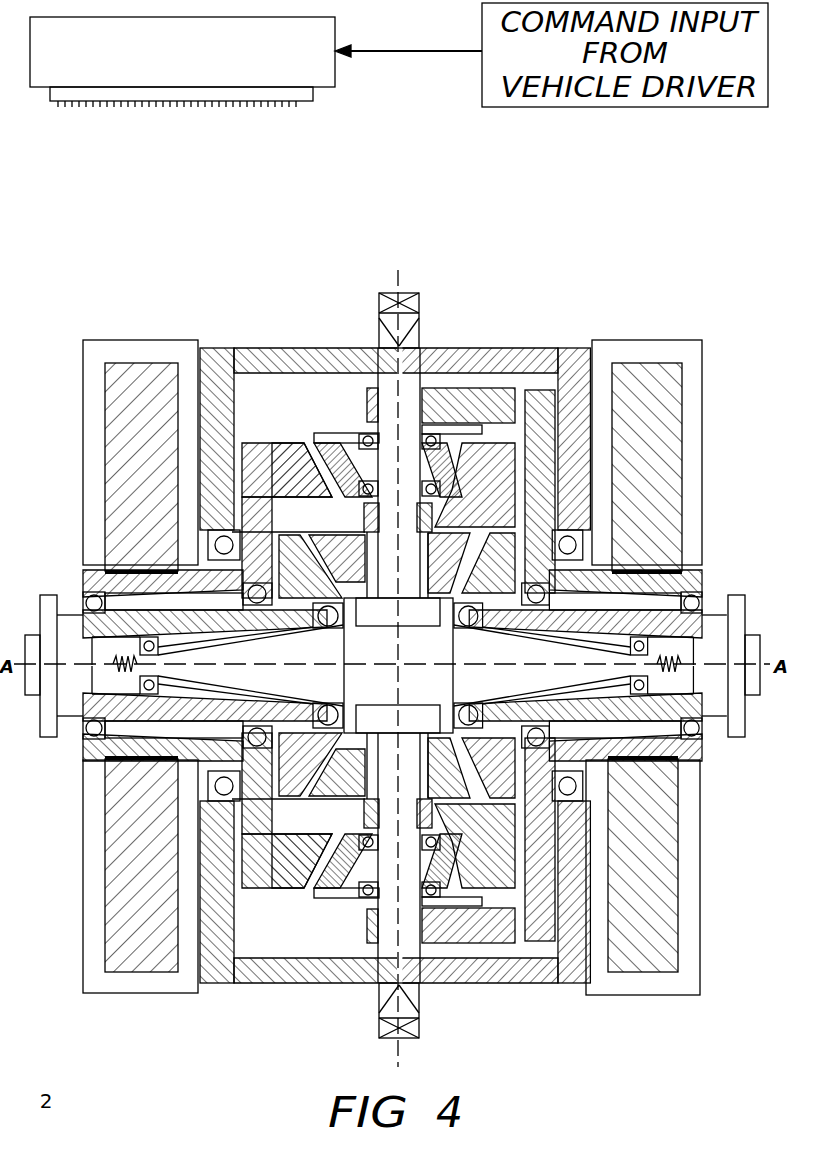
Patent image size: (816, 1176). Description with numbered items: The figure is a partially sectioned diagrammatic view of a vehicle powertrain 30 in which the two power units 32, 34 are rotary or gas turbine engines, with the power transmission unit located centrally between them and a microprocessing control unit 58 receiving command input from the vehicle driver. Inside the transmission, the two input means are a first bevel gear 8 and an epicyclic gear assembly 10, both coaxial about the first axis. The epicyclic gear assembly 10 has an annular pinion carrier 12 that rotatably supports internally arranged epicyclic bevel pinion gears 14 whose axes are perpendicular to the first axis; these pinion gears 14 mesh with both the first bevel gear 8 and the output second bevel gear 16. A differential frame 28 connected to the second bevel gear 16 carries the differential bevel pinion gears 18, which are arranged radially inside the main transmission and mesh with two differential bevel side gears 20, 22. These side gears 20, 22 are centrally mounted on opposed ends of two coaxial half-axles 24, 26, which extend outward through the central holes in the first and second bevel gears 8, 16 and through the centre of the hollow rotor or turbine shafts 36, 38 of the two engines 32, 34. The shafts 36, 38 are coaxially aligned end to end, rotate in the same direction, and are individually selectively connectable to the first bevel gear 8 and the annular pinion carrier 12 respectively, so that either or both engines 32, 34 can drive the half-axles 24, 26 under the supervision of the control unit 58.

The first bevel gear 8 is at (257, 465).
The epicyclic gear assembly 10 is at (355, 410).
The annular pinion carrier 12 is at (452, 400).
The epicyclic bevel pinion gears 14 is at (347, 457).
The second bevel gear 16 is at (518, 423).
The differential bevel pinion gears 18 is at (283, 518).
The differential bevel side gear 20 is at (307, 755).
The differential bevel side gear 22 is at (505, 773).
The power output member 24 is at (44, 740).
The power output member 26 is at (740, 740).
The differential frame 28 is at (376, 522).
The vehicle powertrain 30 is at (150, 228).
The power unit 32 is at (150, 383).
The power unit 34 is at (650, 380).
The power output shaft 36 is at (120, 590).
The power output shaft 38 is at (660, 590).
The microprocessing control unit 58 is at (40, 90).